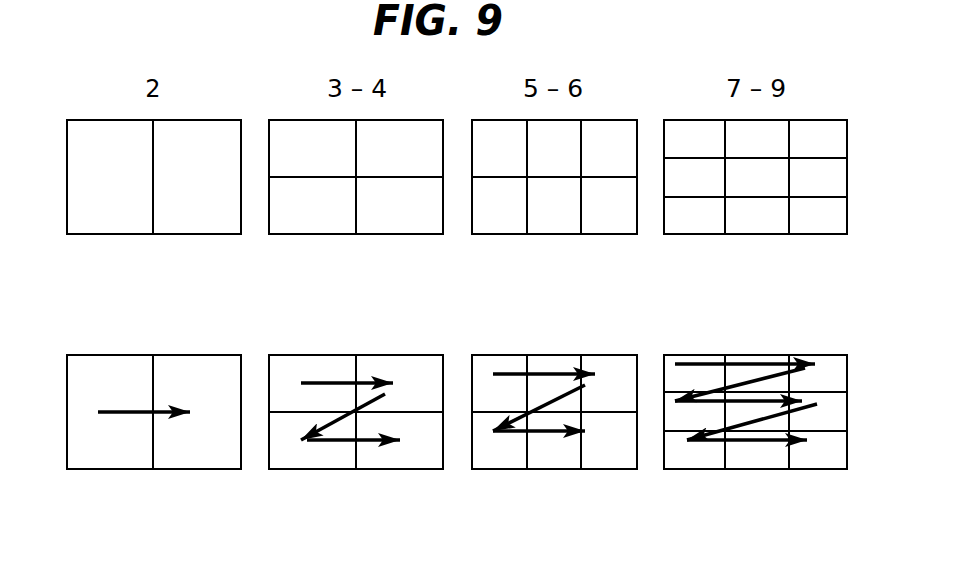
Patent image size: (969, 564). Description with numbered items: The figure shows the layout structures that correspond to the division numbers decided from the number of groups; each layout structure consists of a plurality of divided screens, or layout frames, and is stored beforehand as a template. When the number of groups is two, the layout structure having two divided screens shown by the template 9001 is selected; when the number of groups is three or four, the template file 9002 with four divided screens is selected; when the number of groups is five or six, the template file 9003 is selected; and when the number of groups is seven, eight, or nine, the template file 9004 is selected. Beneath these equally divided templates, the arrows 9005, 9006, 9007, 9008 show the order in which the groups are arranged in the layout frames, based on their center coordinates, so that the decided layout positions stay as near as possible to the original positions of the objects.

The template 9001 is at (141, 226).
The template file 9002 is at (344, 226).
The template file 9003 is at (555, 226).
The template file 9004 is at (757, 226).
The arrow 9005 is at (142, 461).
The arrow 9006 is at (344, 461).
The arrow 9007 is at (555, 461).
The arrow 9008 is at (757, 461).